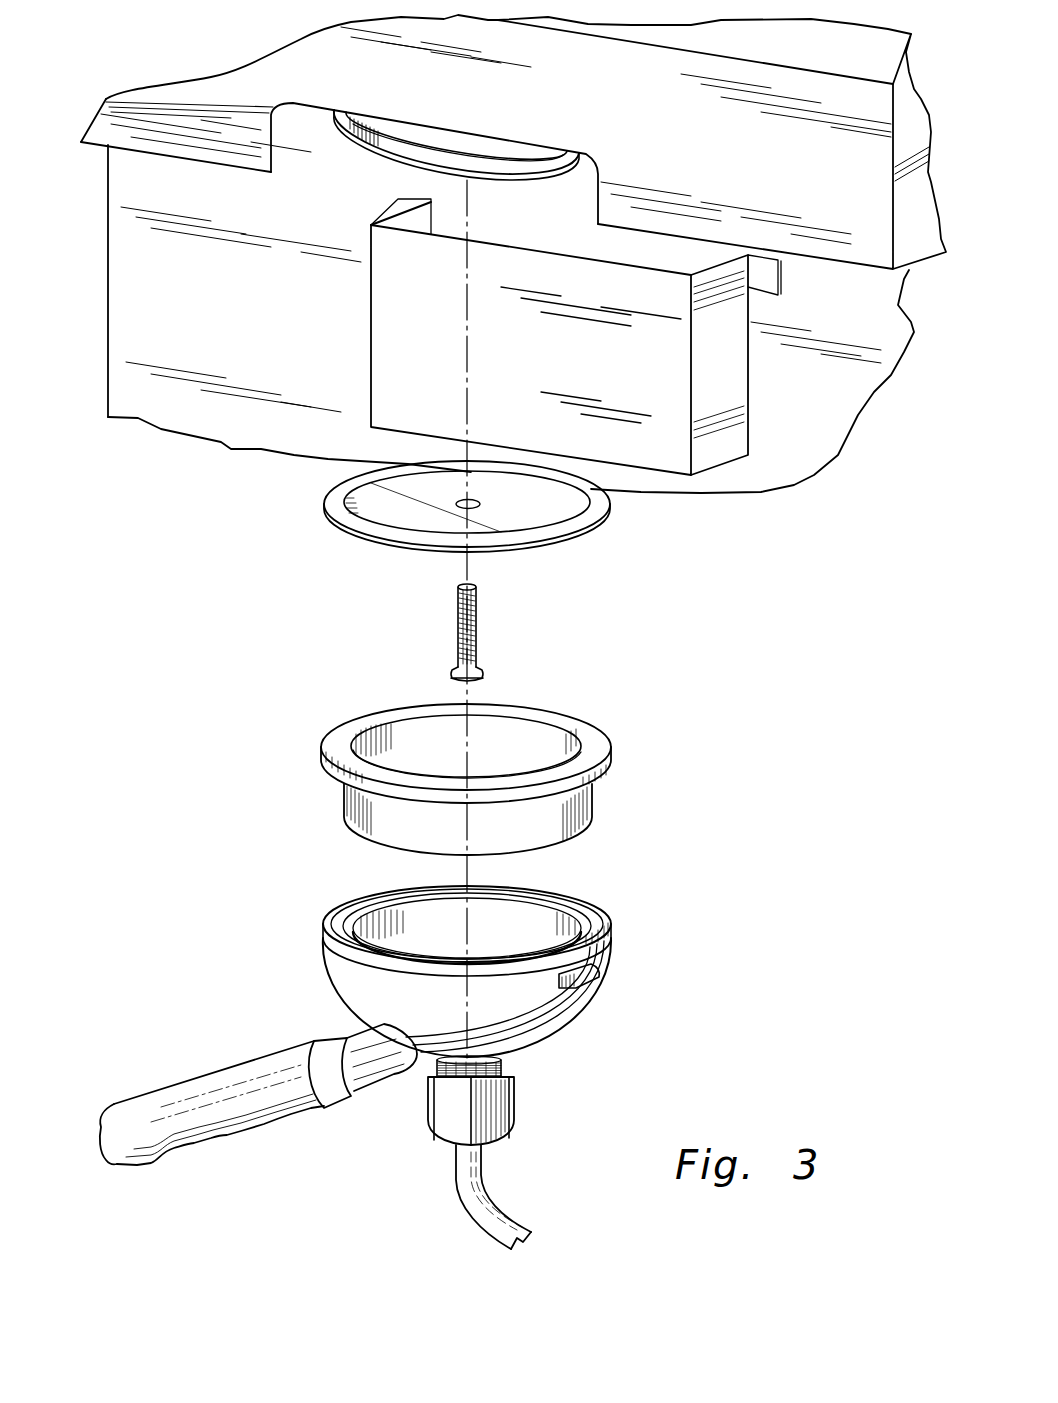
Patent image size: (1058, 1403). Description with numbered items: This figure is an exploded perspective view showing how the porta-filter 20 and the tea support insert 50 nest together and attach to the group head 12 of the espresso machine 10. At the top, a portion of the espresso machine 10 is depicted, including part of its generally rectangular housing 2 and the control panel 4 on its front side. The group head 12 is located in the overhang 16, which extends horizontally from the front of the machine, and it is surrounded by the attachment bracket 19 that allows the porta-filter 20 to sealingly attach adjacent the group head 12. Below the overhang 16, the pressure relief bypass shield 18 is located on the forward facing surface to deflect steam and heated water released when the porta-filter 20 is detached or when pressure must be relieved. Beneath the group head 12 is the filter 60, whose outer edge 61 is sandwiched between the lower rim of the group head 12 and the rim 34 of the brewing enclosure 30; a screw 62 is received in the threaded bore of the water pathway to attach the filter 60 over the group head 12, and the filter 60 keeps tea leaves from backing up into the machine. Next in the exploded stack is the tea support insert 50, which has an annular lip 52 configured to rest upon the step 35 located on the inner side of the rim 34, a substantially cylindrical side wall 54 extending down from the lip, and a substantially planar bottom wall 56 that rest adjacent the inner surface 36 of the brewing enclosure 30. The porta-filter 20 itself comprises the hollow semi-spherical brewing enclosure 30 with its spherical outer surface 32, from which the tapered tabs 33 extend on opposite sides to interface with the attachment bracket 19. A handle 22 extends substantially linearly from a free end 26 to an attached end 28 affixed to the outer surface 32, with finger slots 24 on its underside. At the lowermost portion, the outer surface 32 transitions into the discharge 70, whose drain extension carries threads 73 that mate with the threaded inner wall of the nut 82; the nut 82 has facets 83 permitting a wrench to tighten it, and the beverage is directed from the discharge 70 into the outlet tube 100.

The housing 2 is at (103, 393).
The control panel 4 is at (786, 55).
The espresso machine 10 is at (203, 78).
The group head 12 is at (310, 100).
The overhang 16 is at (195, 160).
The pressure relief bypass shield 18 is at (566, 377).
The attachment bracket 19 is at (513, 147).
The filter 60 is at (308, 515).
The outer edge 61 is at (610, 503).
The screw 62 is at (478, 604).
The tea support insert 50 is at (459, 776).
The annular lip 52 is at (600, 737).
The side wall 54 is at (415, 752).
The bottom wall 56 is at (341, 843).
The porta-filter 20 is at (380, 1056).
The brewing enclosure 30 is at (325, 972).
The outer surface 32 is at (480, 1011).
The tapered tabs 33 is at (597, 980).
The rim 34 is at (607, 903).
The step 35 is at (573, 920).
The inner surface 36 is at (408, 950).
The handle 22 is at (245, 1111).
The finger slots 24 is at (173, 1147).
The free end 26 is at (95, 1127).
The attached end 28 is at (393, 1077).
The discharge 70 is at (535, 1093).
The threads 73 is at (527, 1070).
The nut 82 is at (513, 1113).
The facets 83 is at (452, 1109).
The outlet tube 100 is at (468, 1200).